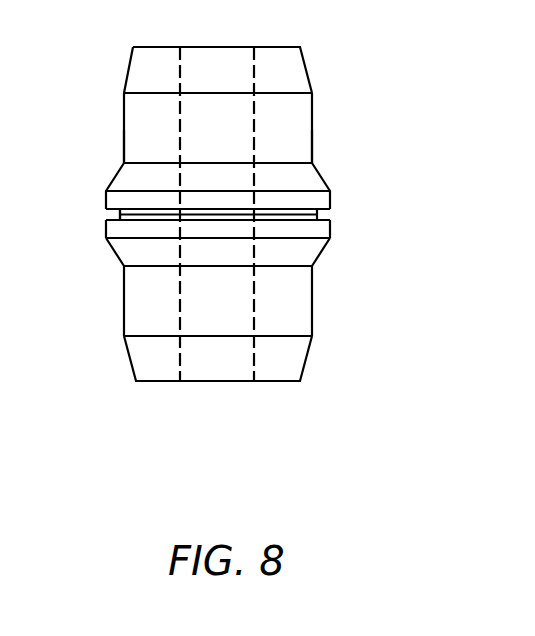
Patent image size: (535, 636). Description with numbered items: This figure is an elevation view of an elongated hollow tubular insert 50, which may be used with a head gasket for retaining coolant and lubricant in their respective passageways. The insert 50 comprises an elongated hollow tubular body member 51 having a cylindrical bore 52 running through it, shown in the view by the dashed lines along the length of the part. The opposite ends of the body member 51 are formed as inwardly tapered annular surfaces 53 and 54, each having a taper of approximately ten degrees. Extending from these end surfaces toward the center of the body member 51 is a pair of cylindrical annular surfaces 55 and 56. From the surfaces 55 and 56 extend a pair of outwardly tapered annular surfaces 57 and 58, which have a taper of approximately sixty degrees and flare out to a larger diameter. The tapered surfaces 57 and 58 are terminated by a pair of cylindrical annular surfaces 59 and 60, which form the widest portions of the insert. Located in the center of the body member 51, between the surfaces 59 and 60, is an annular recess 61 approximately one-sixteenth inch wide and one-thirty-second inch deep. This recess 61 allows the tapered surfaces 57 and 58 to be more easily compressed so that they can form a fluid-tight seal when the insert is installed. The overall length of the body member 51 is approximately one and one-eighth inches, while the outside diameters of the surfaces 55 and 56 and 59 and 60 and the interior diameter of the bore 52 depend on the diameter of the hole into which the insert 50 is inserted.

The insert 50 is at (386, 68).
The body member 51 is at (314, 118).
The cylindrical bore 52 is at (250, 356).
The inwardly tapered annular surface 53 is at (305, 60).
The inwardly tapered annular surface 54 is at (307, 358).
The cylindrical annular surface 55 is at (312, 144).
The cylindrical annular surface 56 is at (312, 301).
The outwardly tapered annular surface 57 is at (323, 177).
The outwardly tapered annular surface 58 is at (323, 252).
The cylindrical annular surface 59 is at (329, 200).
The cylindrical annular surface 60 is at (328, 228).
The annular recess 61 is at (120, 214).